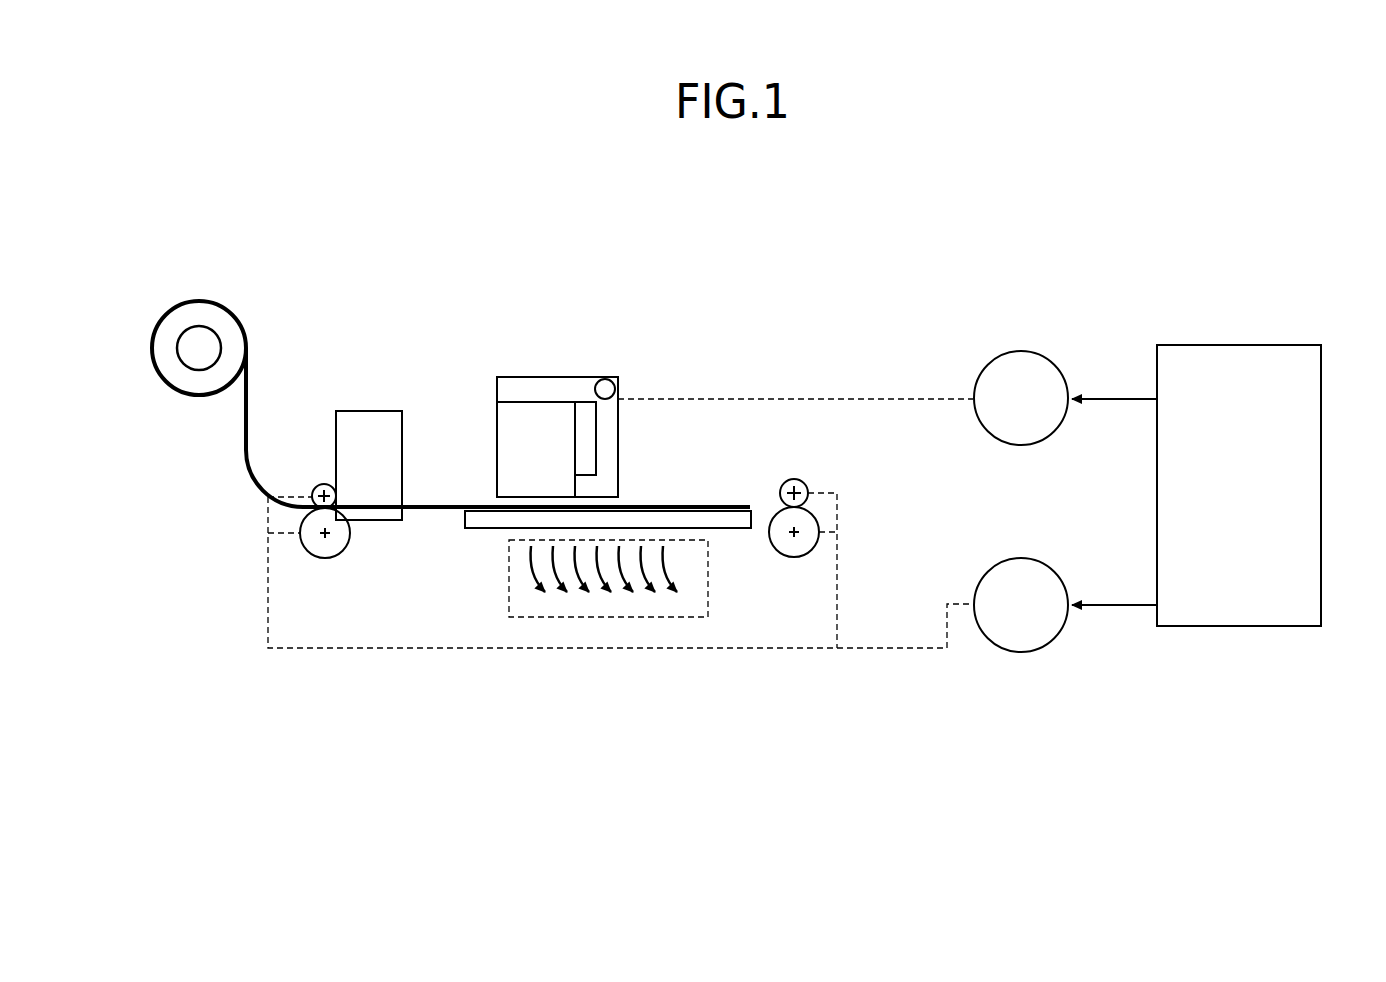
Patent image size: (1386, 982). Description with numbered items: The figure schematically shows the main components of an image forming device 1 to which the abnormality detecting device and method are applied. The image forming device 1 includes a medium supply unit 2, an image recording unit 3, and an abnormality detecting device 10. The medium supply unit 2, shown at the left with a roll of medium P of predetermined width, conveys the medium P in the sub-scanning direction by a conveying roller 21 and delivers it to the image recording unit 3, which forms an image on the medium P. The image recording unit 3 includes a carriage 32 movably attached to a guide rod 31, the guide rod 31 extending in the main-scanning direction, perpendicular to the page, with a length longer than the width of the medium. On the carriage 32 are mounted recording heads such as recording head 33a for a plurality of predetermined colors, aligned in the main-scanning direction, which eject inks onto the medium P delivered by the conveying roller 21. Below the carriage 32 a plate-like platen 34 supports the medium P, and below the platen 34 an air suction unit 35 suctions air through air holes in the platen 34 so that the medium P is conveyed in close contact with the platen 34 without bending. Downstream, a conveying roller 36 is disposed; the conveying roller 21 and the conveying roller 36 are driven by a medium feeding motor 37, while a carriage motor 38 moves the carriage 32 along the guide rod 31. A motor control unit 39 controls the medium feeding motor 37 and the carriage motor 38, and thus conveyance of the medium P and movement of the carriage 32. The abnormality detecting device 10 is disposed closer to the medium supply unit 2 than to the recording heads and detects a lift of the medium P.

The image forming device 1 is at (1072, 188).
The medium P is at (199, 300).
The medium supply unit 2 is at (314, 352).
The conveying roller 21 is at (321, 484).
The abnormality detecting device 10 is at (376, 410).
The image recording unit 3 is at (823, 362).
The guide rod 31 is at (604, 378).
The carriage 32 is at (620, 440).
The recording head 33a is at (512, 447).
The platen 34 is at (487, 530).
The air suction unit 35 is at (604, 617).
The conveying roller 36 is at (793, 478).
The medium feeding motor 37 is at (1021, 652).
The carriage motor 38 is at (1021, 351).
The motor control unit 39 is at (1251, 345).